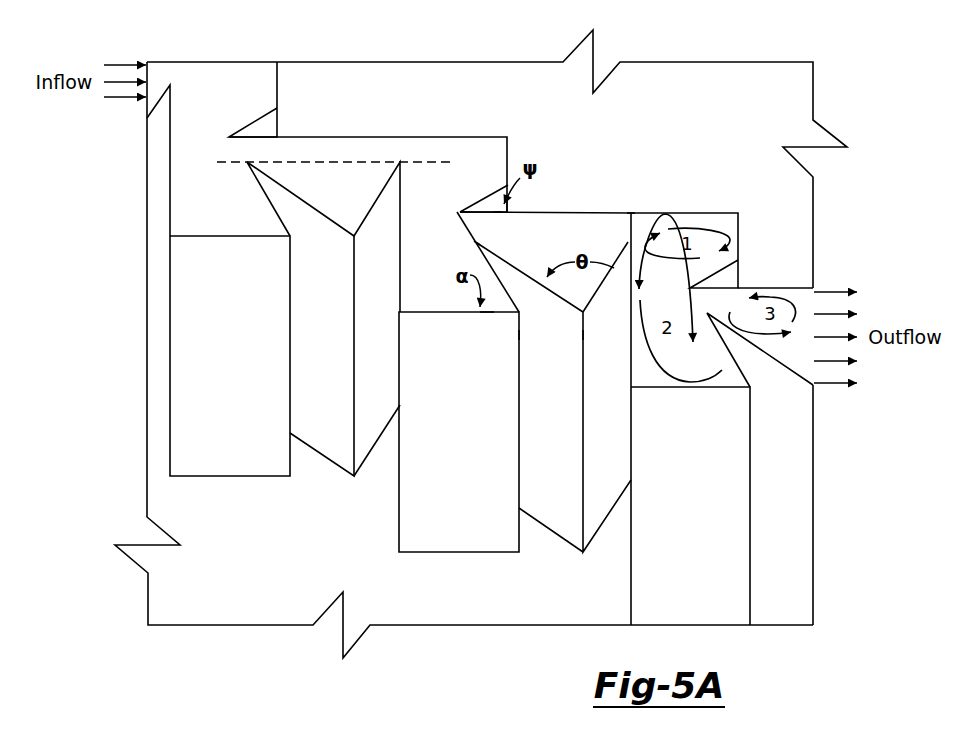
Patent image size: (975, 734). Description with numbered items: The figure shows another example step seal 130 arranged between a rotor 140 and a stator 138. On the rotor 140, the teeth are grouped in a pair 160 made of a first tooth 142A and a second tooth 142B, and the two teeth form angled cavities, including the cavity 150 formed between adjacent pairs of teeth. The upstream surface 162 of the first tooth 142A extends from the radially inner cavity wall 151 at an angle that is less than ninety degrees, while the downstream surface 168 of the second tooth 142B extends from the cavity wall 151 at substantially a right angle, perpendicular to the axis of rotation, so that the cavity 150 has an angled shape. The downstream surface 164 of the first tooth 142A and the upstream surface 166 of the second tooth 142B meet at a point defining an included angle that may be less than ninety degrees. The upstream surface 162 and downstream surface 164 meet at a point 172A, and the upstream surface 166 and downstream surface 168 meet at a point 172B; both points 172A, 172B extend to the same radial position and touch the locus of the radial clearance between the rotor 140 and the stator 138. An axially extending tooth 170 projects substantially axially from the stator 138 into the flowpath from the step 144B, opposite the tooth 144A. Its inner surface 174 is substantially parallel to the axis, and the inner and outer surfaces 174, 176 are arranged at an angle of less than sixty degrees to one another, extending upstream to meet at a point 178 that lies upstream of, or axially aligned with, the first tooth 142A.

The step seal 130 is at (467, 48).
The stator 138 is at (748, 92).
The rotor 140 is at (447, 625).
The first seal tooth 144A is at (400, 290).
The step 144B is at (508, 152).
The angled cavity 150 is at (427, 292).
The radially inner cavity wall 151 is at (487, 312).
The first tooth 142A is at (532, 293).
The second tooth 142B is at (620, 275).
The pair of teeth 160 is at (553, 449).
The upstream surface of the first tooth 162 is at (478, 246).
The downstream surface of the first tooth 164 is at (505, 255).
The upstream surface of the second tooth 166 is at (617, 255).
The downstream surface of the second tooth 168 is at (641, 258).
The axially extending tooth 170 is at (480, 210).
The point of the first tooth 172A is at (478, 244).
The point of the second tooth 172B is at (630, 262).
The inner surface of the axial tooth 174 is at (497, 212).
The outer surface of the axial tooth 176 is at (495, 212).
The point of the axial tooth 178 is at (460, 212).